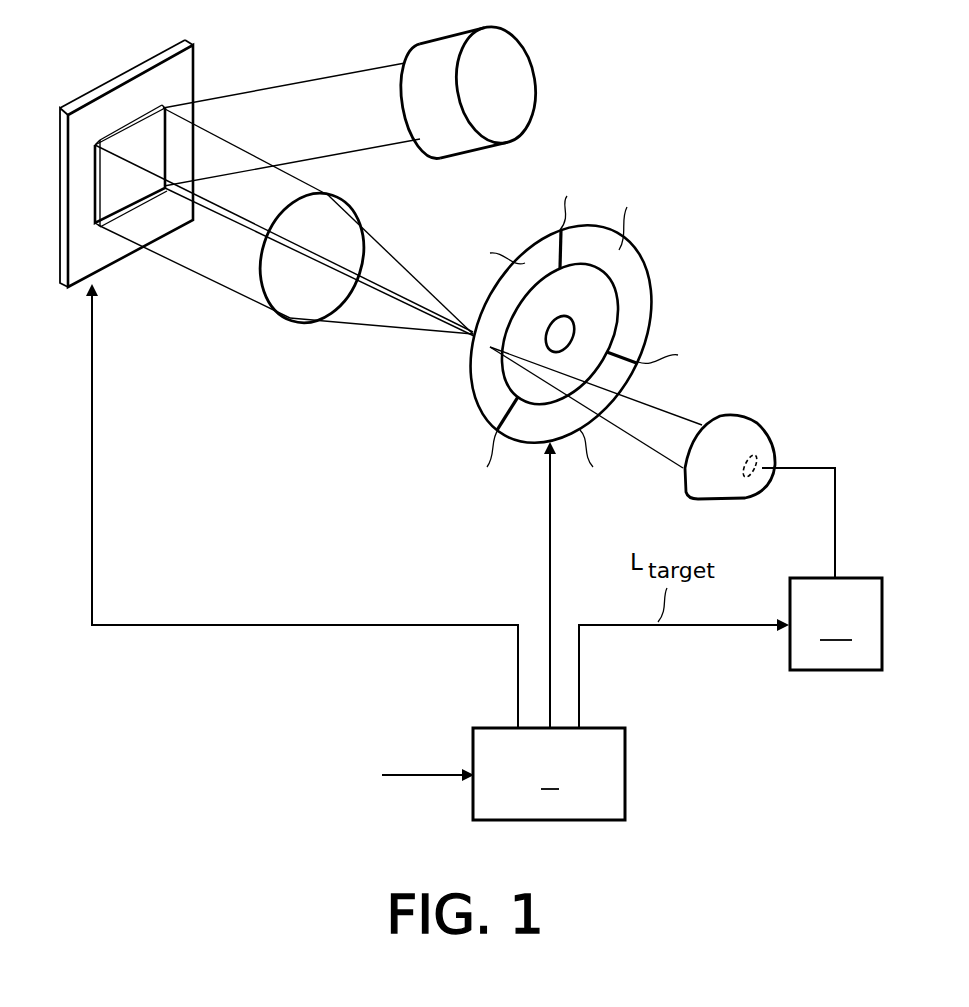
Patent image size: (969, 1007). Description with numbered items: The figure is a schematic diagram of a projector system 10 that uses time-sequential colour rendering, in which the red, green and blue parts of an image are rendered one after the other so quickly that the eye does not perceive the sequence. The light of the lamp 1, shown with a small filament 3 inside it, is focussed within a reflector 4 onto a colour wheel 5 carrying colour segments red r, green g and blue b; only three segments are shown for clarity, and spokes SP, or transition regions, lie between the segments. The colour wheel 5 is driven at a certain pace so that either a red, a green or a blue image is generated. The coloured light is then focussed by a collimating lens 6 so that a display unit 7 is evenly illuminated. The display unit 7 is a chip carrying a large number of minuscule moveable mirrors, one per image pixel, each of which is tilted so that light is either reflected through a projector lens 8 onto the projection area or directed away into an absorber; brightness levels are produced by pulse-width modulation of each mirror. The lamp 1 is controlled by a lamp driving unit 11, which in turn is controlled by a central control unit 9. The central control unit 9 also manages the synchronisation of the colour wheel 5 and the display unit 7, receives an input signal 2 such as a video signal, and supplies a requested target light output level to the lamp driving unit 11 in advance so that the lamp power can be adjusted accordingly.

The lamp 1 is at (778, 448).
The signal 2 is at (417, 773).
The filament of the lamp 3 is at (753, 463).
The reflector 4 is at (738, 430).
The colour wheel 5 is at (660, 297).
The collimating lens 6 is at (355, 237).
The display unit 7 is at (108, 181).
The projector lens 8 is at (520, 90).
The central control unit 9 is at (439, 553).
The projector system 10 is at (766, 128).
The lamp driving unit 11 is at (836, 624).